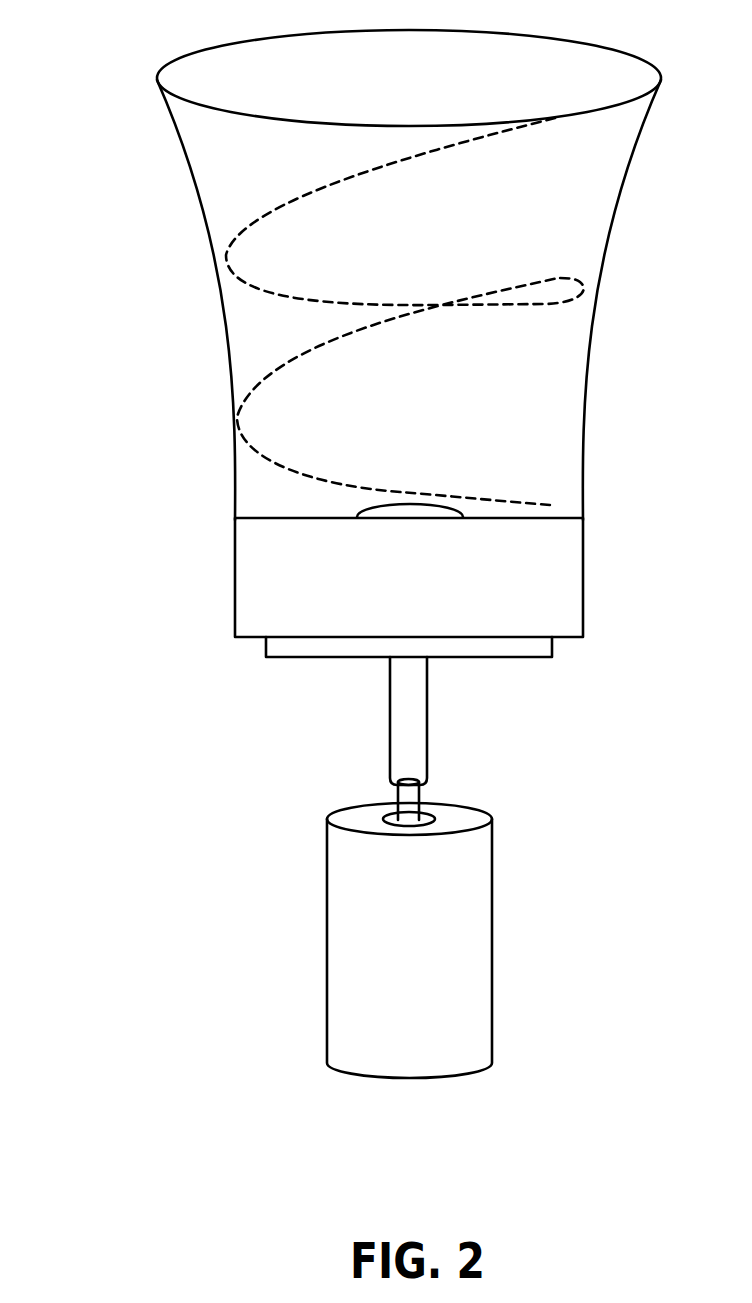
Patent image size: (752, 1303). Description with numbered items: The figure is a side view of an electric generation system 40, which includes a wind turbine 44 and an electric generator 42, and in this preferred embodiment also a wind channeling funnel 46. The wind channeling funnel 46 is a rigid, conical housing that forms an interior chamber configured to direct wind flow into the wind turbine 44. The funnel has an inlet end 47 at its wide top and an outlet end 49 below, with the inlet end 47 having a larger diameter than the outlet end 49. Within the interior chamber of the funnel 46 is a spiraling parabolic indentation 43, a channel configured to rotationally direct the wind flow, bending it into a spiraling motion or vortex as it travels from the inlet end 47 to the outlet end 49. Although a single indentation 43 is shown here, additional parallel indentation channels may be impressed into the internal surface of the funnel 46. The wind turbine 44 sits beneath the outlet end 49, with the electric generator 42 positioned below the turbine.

The electric generation system 40 is at (146, 286).
The electric generator 42 is at (340, 925).
The spiraling parabolic indentation 43 is at (558, 279).
The wind turbine 44 is at (245, 560).
The wind channeling funnel 46 is at (593, 358).
The inlet end 47 is at (588, 63).
The outlet end 49 is at (495, 517).